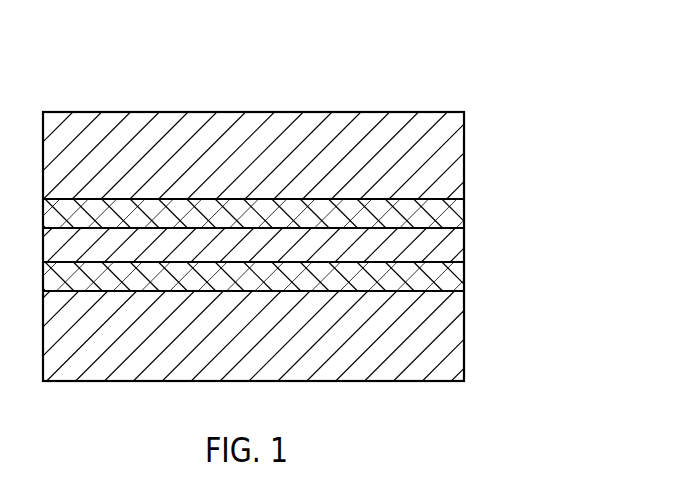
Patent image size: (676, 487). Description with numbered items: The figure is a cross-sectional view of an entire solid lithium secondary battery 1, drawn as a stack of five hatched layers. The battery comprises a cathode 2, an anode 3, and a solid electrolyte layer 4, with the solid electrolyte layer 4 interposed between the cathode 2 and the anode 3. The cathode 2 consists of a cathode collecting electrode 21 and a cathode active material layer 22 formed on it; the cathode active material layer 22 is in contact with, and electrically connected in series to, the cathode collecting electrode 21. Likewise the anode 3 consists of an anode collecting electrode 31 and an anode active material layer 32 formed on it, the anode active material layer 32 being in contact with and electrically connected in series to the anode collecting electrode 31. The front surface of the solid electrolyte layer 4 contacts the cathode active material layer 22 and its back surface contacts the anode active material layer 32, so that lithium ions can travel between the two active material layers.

The entire solid lithium secondary battery 1 is at (491, 77).
The cathode 2 is at (537, 247).
The anode 3 is at (537, 128).
The solid electrolyte layer 4 is at (455, 240).
The cathode collecting electrode 21 is at (442, 342).
The cathode active material layer 22 is at (445, 280).
The anode collecting electrode 31 is at (440, 167).
The anode active material layer 32 is at (443, 211).